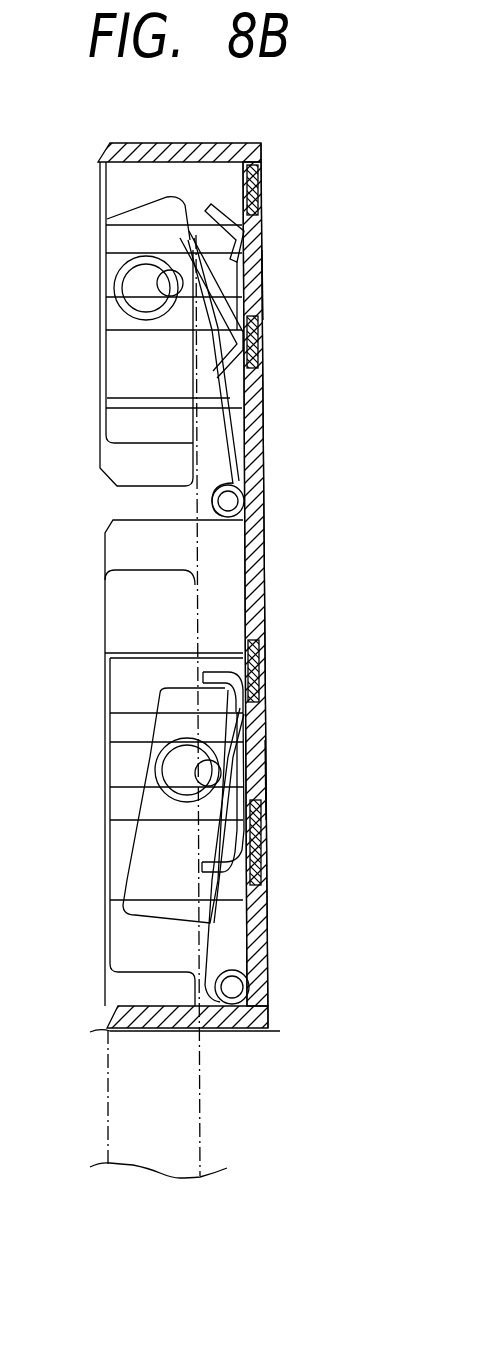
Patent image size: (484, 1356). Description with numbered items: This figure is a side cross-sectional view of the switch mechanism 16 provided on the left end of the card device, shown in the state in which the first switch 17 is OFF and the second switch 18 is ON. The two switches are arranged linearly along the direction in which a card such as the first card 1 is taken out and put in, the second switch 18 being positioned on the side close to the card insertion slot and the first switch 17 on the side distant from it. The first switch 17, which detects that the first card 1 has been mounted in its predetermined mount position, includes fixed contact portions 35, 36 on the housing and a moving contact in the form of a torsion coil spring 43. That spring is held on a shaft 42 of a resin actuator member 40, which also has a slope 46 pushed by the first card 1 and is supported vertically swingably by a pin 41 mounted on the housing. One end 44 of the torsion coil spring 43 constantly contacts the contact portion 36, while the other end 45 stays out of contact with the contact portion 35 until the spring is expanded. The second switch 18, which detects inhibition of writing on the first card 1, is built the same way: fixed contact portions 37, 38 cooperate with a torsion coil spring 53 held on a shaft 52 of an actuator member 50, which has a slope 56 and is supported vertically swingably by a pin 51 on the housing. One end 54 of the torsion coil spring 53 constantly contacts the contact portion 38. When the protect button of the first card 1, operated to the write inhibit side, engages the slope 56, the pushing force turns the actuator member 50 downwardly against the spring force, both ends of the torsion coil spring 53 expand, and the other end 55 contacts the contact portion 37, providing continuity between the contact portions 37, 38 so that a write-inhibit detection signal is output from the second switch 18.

The first card 1 is at (108, 1107).
The switch mechanism 16 is at (338, 502).
The first switch 17 is at (272, 287).
The second switch 18 is at (278, 782).
The contact portion 35 is at (258, 178).
The contact portion 36 is at (258, 332).
The contact portion 37 is at (262, 678).
The contact portion 38 is at (264, 829).
The actuator member 40 is at (100, 460).
The pin 41 is at (210, 505).
The shaft 42 is at (140, 305).
The torsion coil spring 43 is at (120, 264).
The one end 44 is at (240, 368).
The other end 45 is at (258, 208).
The slope 46 is at (180, 327).
The actuator member 50 is at (128, 918).
The pin 51 is at (215, 987).
The shaft 52 is at (172, 782).
The torsion coil spring 53 is at (153, 744).
The one end 54 is at (240, 888).
The other end 55 is at (233, 672).
The slope 56 is at (165, 828).